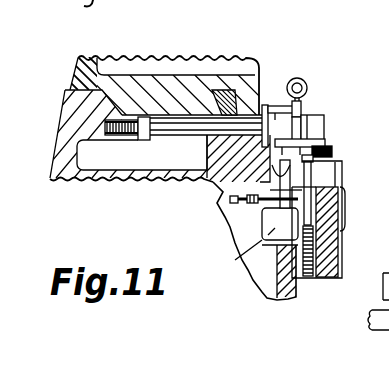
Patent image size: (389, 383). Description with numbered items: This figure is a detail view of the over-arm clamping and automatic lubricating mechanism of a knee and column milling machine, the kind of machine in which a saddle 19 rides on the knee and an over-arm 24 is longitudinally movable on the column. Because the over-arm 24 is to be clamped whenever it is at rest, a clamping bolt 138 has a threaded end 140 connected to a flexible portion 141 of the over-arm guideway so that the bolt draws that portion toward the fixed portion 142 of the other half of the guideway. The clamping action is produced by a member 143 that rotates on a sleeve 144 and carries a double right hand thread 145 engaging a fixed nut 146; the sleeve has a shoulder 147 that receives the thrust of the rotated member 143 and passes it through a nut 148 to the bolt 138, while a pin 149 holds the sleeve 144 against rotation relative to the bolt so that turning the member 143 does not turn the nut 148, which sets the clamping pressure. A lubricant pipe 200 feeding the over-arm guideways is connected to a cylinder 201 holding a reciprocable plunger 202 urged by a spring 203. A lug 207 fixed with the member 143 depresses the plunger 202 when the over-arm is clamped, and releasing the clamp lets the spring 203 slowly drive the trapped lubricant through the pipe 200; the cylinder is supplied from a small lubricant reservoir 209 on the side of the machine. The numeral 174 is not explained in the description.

The over-arm 24 is at (80, 78).
The flexible portion of the over-arm guideway 141 is at (67, 117).
The threaded end 140 is at (123, 137).
The clamping bolt 138 is at (175, 136).
The pin 149 is at (231, 171).
The fixed portion of the guideway 142 is at (259, 104).
The double right hand thread 145 is at (268, 106).
The fixed nut 146 is at (293, 77).
The clamping member 143 is at (301, 103).
The shoulder 147 is at (306, 113).
The nut 148 is at (325, 122).
The sleeve 144 is at (326, 143).
The lug 207 is at (333, 150).
The lubricant pipe 200 is at (256, 222).
The lubricant reservoir 209 is at (246, 244).
The cylinder 201 is at (342, 195).
The plunger 202 is at (342, 220).
The spring 203 is at (339, 254).
The adjacent figure part 174 is at (388, 350).
The saddle 19 is at (383, 256).